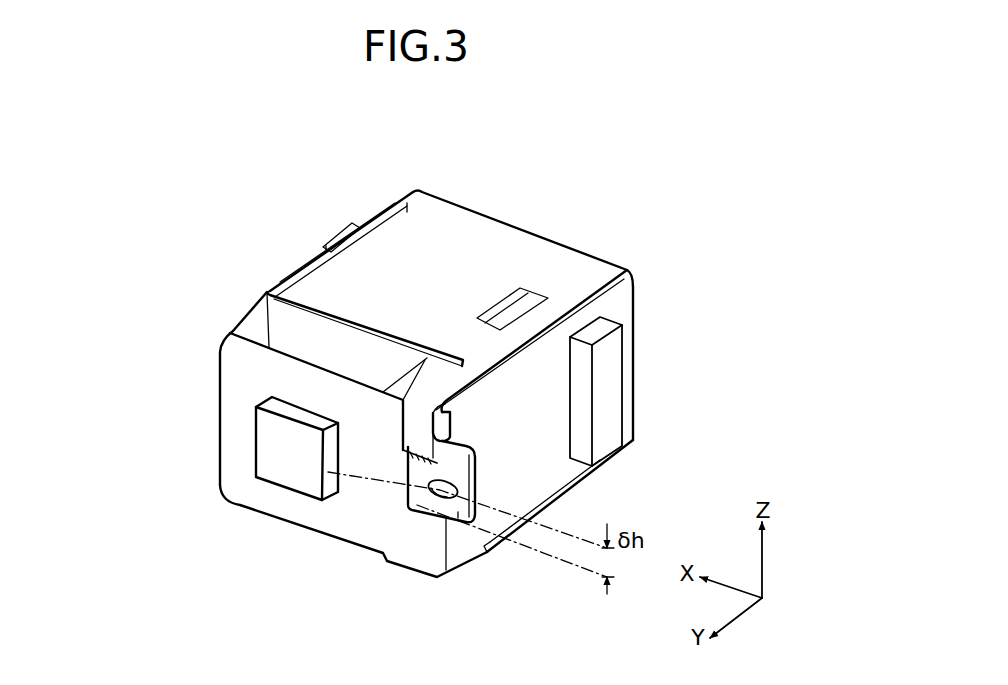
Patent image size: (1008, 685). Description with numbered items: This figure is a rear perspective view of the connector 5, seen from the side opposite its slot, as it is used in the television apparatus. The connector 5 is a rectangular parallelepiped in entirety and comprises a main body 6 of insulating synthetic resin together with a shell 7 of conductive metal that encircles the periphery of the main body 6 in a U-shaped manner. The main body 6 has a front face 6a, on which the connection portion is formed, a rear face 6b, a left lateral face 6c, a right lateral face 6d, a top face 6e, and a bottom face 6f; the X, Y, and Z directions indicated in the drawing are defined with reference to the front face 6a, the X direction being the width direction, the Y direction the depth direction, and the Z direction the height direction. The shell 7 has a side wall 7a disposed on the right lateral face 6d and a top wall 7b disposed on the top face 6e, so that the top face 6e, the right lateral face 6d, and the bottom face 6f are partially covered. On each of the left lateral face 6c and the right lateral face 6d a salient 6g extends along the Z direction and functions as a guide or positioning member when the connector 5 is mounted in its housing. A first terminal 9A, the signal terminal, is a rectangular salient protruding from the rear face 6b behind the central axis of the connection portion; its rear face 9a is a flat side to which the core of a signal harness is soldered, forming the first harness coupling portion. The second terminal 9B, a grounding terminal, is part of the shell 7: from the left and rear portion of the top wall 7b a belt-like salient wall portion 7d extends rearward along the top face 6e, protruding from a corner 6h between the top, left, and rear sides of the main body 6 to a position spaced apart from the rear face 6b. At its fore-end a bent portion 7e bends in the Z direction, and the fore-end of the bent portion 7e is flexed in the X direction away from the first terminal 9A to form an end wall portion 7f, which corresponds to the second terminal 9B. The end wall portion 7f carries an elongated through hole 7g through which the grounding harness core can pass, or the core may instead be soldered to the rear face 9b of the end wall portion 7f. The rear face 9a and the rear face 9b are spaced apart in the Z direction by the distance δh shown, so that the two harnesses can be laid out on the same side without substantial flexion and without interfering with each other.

The connector 5 is at (504, 190).
The main body 6 is at (637, 372).
The front face 6a is at (637, 307).
The rear face 6b is at (237, 403).
The left lateral face 6c is at (557, 350).
The right lateral face 6d is at (220, 360).
The top face 6e is at (300, 341).
The bottom face 6f is at (333, 537).
The salient 6g is at (338, 227).
The corner 6h is at (470, 473).
The shell 7 is at (290, 275).
The side wall 7a is at (315, 258).
The top wall 7b is at (407, 202).
The salient wall portion 7d is at (455, 386).
The bent portion 7e is at (403, 447).
The end wall portion 7f is at (565, 489).
The through hole 7g is at (445, 494).
The first terminal 9A is at (255, 463).
The rear face of the first terminal 9a is at (273, 473).
The second terminal 9B is at (545, 501).
The rear face of the end wall portion 9b is at (460, 512).